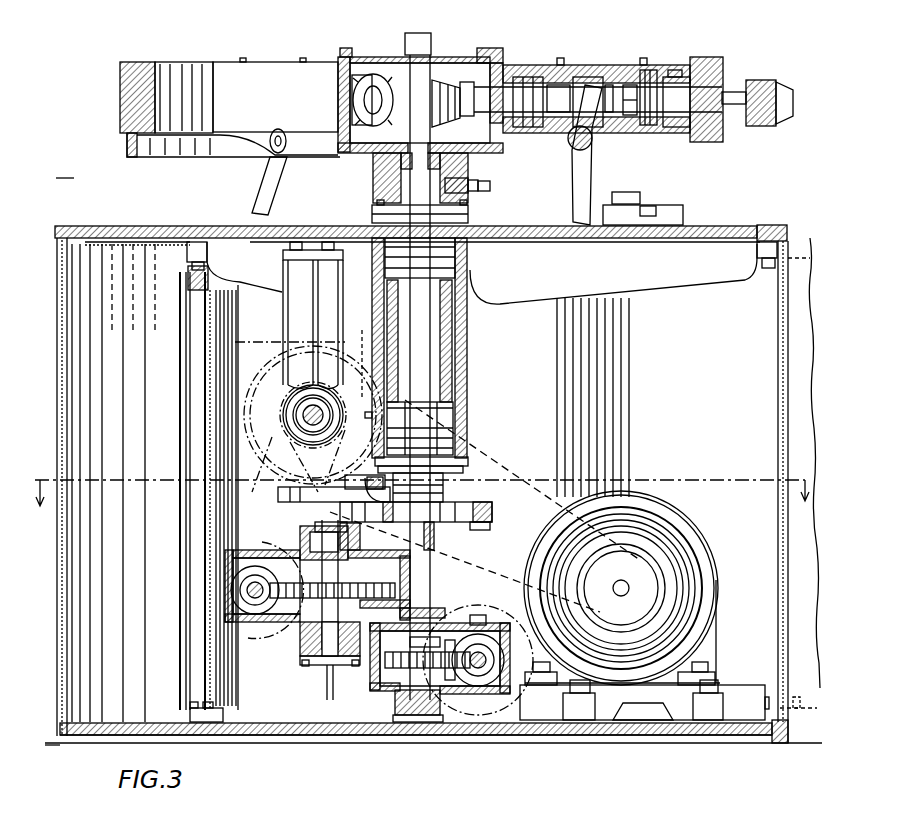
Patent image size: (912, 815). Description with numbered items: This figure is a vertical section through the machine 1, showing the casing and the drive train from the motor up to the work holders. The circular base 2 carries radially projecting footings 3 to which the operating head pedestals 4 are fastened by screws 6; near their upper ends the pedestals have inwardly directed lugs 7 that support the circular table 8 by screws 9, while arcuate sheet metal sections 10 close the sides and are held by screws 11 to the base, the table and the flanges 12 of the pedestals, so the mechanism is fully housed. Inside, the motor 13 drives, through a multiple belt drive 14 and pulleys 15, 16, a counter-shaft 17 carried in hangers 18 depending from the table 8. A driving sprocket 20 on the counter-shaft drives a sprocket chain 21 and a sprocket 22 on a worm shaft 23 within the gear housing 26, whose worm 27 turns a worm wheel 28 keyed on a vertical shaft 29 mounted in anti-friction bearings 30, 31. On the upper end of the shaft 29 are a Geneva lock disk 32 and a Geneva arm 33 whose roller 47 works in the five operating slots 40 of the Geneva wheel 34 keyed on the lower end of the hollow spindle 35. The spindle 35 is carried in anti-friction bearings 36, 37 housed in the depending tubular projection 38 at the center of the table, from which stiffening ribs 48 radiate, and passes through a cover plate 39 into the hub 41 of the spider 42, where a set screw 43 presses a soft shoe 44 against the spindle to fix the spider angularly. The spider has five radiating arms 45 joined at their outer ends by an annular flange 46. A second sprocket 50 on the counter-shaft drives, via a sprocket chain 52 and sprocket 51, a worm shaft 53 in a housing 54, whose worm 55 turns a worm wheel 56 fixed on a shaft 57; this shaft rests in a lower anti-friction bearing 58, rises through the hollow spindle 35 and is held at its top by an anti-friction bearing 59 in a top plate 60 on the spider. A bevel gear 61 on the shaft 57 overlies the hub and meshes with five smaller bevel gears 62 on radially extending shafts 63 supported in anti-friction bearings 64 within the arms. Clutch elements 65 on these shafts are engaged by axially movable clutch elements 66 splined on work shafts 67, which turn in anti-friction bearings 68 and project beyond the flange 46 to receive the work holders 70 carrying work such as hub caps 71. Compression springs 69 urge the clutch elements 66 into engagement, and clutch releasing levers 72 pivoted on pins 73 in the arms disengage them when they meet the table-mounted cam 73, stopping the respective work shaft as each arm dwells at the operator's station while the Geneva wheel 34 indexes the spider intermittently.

The machine 1 is at (65, 168).
The circular base 2 is at (646, 742).
The footings 3 is at (808, 740).
The operating head pedestals 4 is at (805, 214).
The screws 6 is at (213, 700).
The lugs 7 is at (196, 240).
The table 8 is at (126, 212).
The screws 9 is at (208, 240).
The arcuate sheet metal sections 10 is at (62, 388).
The screws 11 is at (779, 368).
The flanges 12 is at (779, 450).
The motor 13 is at (718, 553).
The multiple belt drive 14 is at (508, 466).
The pulley 15 is at (660, 598).
The pulley 16 is at (270, 356).
The counter-shaft 17 is at (303, 415).
The hangers 18 is at (284, 309).
The driving sprocket 20 is at (290, 398).
The sprocket chain 21 is at (195, 516).
The sprocket 22 is at (225, 566).
The worm shaft 23 is at (247, 591).
The gear housing 26 is at (232, 636).
The worm 27 is at (270, 590).
The worm wheel 28 is at (300, 632).
The vertically extending shaft 29 is at (316, 530).
The anti-friction bearing 30 is at (360, 540).
The anti-friction bearing 31 is at (310, 665).
The Geneva lock disk 32 is at (278, 498).
The Geneva arm 33 is at (345, 486).
The Geneva wheel 34 is at (472, 524).
The hollow spindle 35 is at (372, 190).
The anti-friction bearing 36 is at (470, 262).
The anti-friction bearing 37 is at (468, 438).
The tubular projection 38 is at (468, 338).
The cover plate 39 is at (470, 216).
The operating slots 40 is at (492, 510).
The hub 41 is at (370, 172).
The spider 42 is at (335, 62).
The set screw 43 is at (480, 182).
The shoe 44 is at (488, 190).
The radiating arms 45 is at (222, 72).
The annular flange 46 is at (150, 62).
The roller 47 is at (440, 522).
The stiffening ribs 48 is at (644, 290).
The sprocket 50 is at (299, 425).
The sprocket 51 is at (495, 633).
The sprocket chain 52 is at (478, 612).
The worm shaft 53 is at (478, 670).
The housing 54 is at (490, 692).
The worm 55 is at (480, 640).
The worm wheel 56 is at (442, 630).
The shaft 57 is at (440, 38).
The anti-friction bearing 58 is at (420, 680).
The anti-friction bearing 59 is at (440, 80).
The top plate 60 is at (382, 55).
The bevel gear 61 is at (350, 137).
The bevel gears 62 is at (400, 58).
The radially extending shafts 63 is at (535, 87).
The anti-friction bearings 64 is at (522, 77).
The clutch elements 65 is at (608, 85).
The movable clutch elements 66 is at (630, 85).
The work shafts 67 is at (730, 92).
The anti-friction bearings 68 is at (700, 77).
The compression spring 69 is at (655, 72).
The work holder 70 is at (775, 120).
The hub cap 71 is at (778, 84).
The clutch releasing levers 72 is at (272, 178).
The pins 73 is at (287, 156).